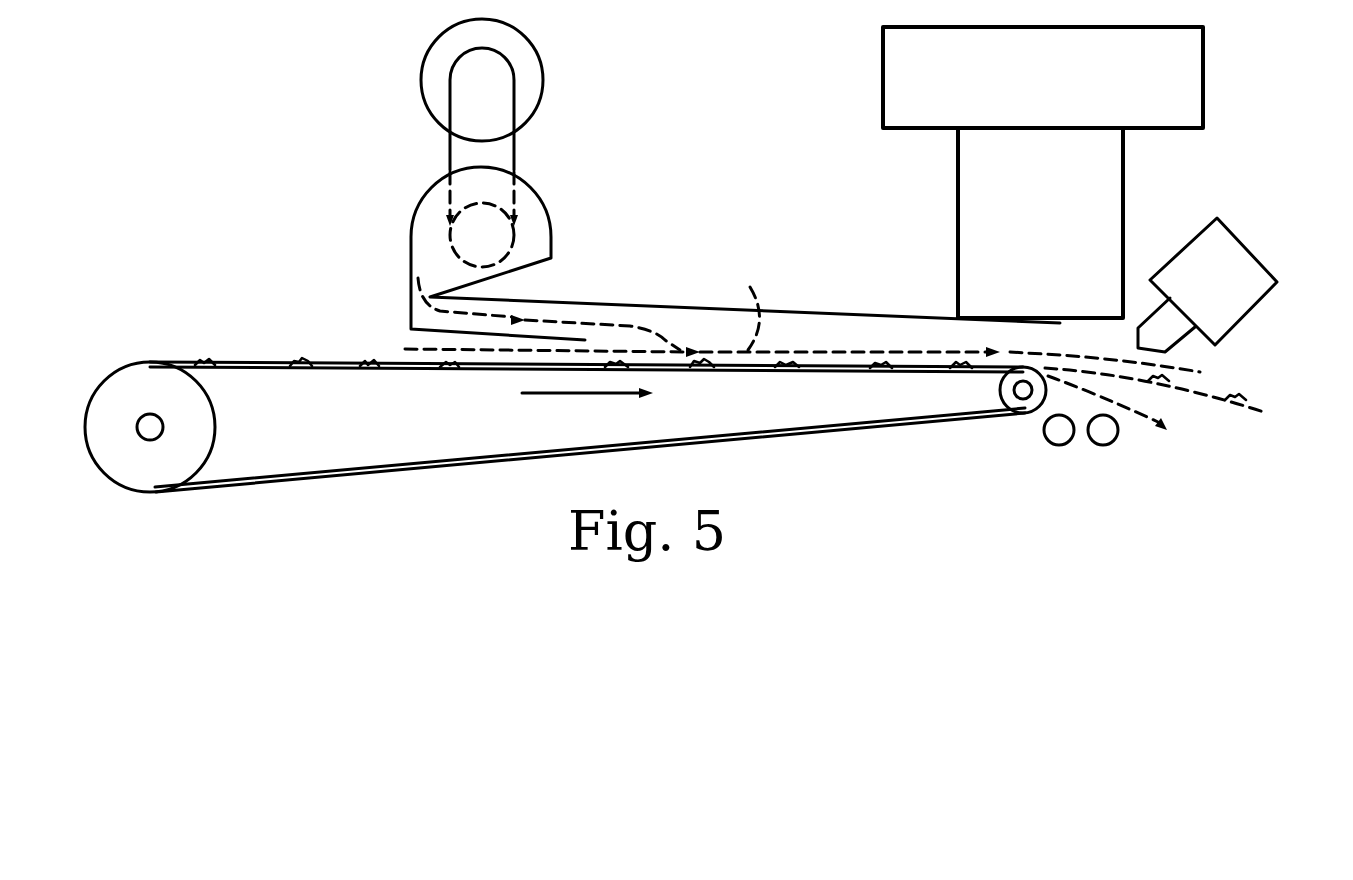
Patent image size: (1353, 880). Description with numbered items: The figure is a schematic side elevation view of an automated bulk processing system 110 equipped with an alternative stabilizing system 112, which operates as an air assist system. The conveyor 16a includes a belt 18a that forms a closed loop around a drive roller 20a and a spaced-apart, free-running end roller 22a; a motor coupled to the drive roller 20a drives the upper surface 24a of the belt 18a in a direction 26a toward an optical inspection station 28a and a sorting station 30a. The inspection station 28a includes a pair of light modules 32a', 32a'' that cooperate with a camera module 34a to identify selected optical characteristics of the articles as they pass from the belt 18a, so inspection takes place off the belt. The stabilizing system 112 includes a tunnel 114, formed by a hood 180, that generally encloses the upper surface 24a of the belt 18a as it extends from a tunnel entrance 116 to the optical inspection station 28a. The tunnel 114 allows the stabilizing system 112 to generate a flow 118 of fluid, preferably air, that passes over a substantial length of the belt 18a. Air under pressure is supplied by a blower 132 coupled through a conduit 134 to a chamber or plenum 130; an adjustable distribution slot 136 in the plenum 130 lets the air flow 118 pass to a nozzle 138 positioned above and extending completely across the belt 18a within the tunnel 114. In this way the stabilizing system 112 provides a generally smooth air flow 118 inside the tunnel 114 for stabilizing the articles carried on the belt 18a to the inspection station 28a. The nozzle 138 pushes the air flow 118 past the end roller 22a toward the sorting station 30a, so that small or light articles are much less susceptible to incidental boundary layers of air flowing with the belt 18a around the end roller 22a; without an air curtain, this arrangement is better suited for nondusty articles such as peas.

The automated bulk processing system 110 is at (270, 166).
The conveyor 16a is at (752, 420).
The belt 18a is at (795, 370).
The drive roller 20a is at (128, 465).
The end roller 22a is at (1027, 415).
The upper surface of belt 24a is at (262, 360).
The direction of belt travel 26a is at (603, 393).
The optical inspection station 28a is at (1146, 190).
The sorting station 30a is at (1277, 285).
The light module 32a' is at (911, 218).
The light module 32a'' is at (1088, 466).
The camera module 34a is at (1207, 98).
The stabilizing system 112 is at (632, 272).
The tunnel 114 is at (793, 330).
The tunnel entrance 116 is at (392, 339).
The air flow 118 is at (752, 303).
The plenum 130 is at (550, 235).
The blower 132 is at (543, 82).
The conduit 134 is at (513, 155).
The adjustable distribution slot 136 is at (410, 292).
The nozzle 138 is at (527, 307).
The hood 180 is at (718, 310).